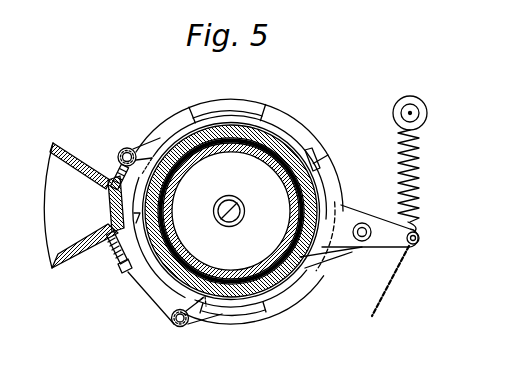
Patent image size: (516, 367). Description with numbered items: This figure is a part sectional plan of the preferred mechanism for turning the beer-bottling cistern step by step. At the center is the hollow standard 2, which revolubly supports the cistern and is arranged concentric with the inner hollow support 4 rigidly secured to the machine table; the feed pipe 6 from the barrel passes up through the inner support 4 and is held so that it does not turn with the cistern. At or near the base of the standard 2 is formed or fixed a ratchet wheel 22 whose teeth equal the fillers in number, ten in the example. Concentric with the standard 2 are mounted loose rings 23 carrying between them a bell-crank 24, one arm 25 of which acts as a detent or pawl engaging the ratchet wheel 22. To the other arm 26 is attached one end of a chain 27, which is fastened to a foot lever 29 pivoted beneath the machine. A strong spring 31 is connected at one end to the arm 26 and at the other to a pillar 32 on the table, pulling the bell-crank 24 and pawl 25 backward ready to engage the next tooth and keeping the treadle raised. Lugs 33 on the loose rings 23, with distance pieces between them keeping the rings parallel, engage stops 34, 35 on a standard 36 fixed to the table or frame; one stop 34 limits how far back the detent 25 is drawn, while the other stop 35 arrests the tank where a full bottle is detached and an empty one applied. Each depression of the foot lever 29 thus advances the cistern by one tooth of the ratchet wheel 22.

The hollow standard 2 is at (186, 138).
The inner hollow support 4 is at (251, 149).
The feed pipe 6 is at (229, 211).
The ratchet wheel 22 is at (275, 117).
The loose rings 23 is at (163, 291).
The bell-crank 24 is at (362, 243).
The arm (detent or pawl) 25 is at (316, 270).
The arm 26 is at (420, 243).
The chain 27 is at (380, 309).
The foot lever 29 is at (317, 168).
The spring 31 is at (420, 172).
The pillar 32 is at (427, 113).
The lugs 33 is at (130, 147).
The stop 34 is at (120, 164).
The stop 35 is at (116, 260).
The standard 36 is at (106, 208).